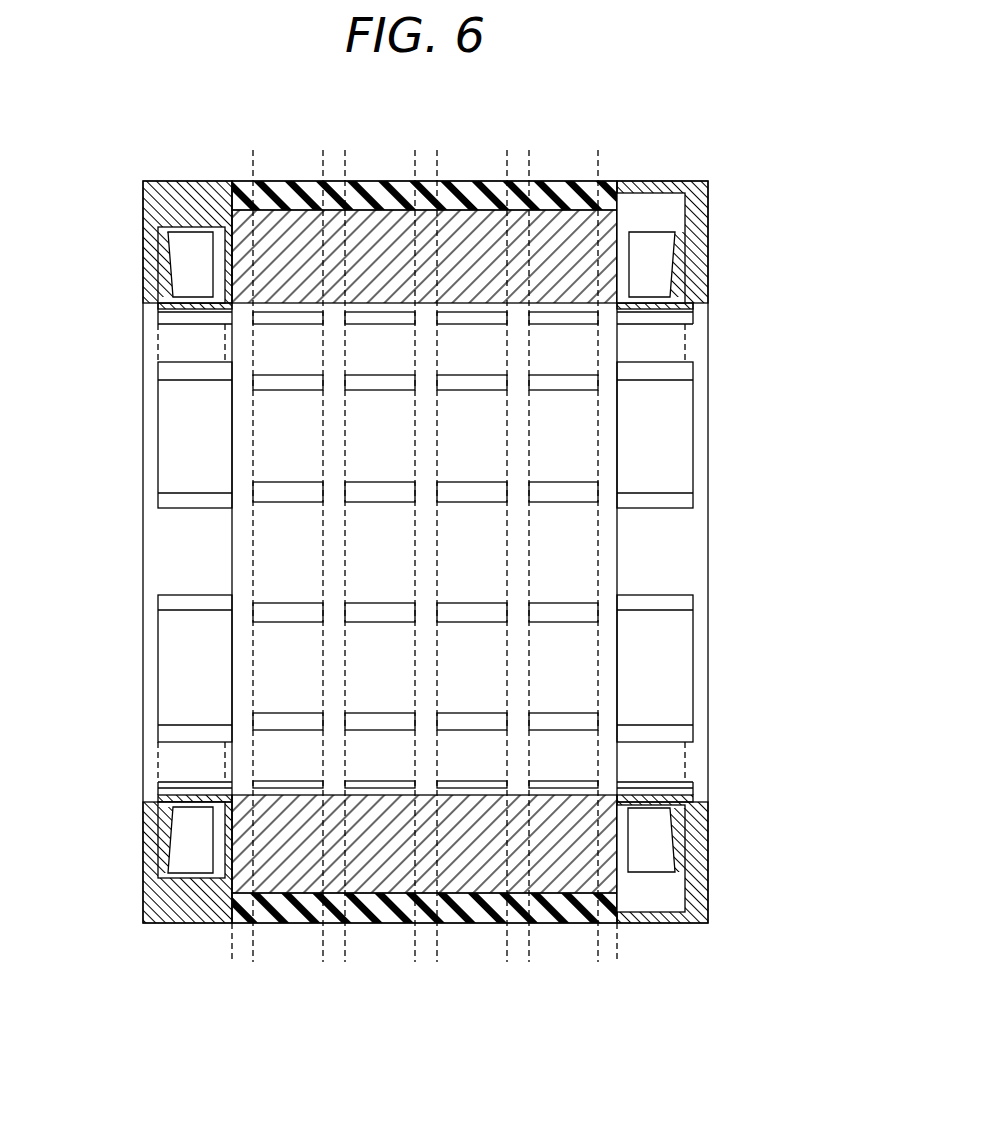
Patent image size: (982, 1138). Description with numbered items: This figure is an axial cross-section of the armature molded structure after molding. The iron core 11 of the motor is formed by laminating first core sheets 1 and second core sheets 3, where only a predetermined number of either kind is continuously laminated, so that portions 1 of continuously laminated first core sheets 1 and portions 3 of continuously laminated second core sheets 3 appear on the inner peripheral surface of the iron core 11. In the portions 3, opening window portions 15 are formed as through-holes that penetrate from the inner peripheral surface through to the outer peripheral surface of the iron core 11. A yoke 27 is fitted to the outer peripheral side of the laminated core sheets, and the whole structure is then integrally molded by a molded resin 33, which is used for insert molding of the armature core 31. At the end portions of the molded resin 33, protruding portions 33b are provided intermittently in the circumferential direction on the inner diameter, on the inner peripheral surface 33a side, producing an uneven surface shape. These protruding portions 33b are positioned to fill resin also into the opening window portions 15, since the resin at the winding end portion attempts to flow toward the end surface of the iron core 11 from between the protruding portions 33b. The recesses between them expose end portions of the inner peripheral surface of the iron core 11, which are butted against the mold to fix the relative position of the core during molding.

The first core sheets 1 is at (232, 960).
The second core sheets 3 is at (253, 150).
The iron core 11 is at (472, 893).
The opening window portions 15 is at (562, 374).
The yoke 27 is at (375, 923).
The armature core 31 is at (743, 153).
The molded resin 33 is at (143, 197).
The inner peripheral surface 33a is at (190, 558).
The protruding portions 33b is at (178, 440).